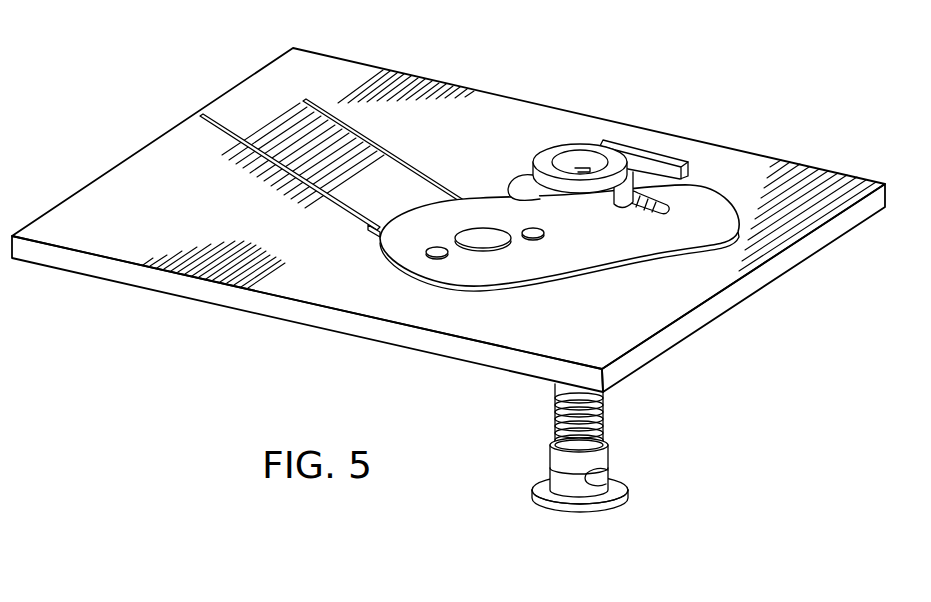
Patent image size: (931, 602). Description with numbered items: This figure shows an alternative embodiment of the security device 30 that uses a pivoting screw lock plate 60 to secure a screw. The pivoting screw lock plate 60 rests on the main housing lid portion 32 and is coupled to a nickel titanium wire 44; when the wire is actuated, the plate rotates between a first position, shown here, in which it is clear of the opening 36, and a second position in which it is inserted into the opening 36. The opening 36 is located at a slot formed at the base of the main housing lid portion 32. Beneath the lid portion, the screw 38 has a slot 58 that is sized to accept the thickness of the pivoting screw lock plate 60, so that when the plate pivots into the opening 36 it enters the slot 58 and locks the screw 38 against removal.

The security device 30 is at (610, 80).
The main housing lid portion 32 is at (262, 316).
The opening 36 is at (543, 152).
The screw 38 is at (562, 513).
The nickel titanium wire 44 is at (240, 146).
The slot 58 is at (609, 476).
The pivoting screw lock plate 60 is at (593, 278).